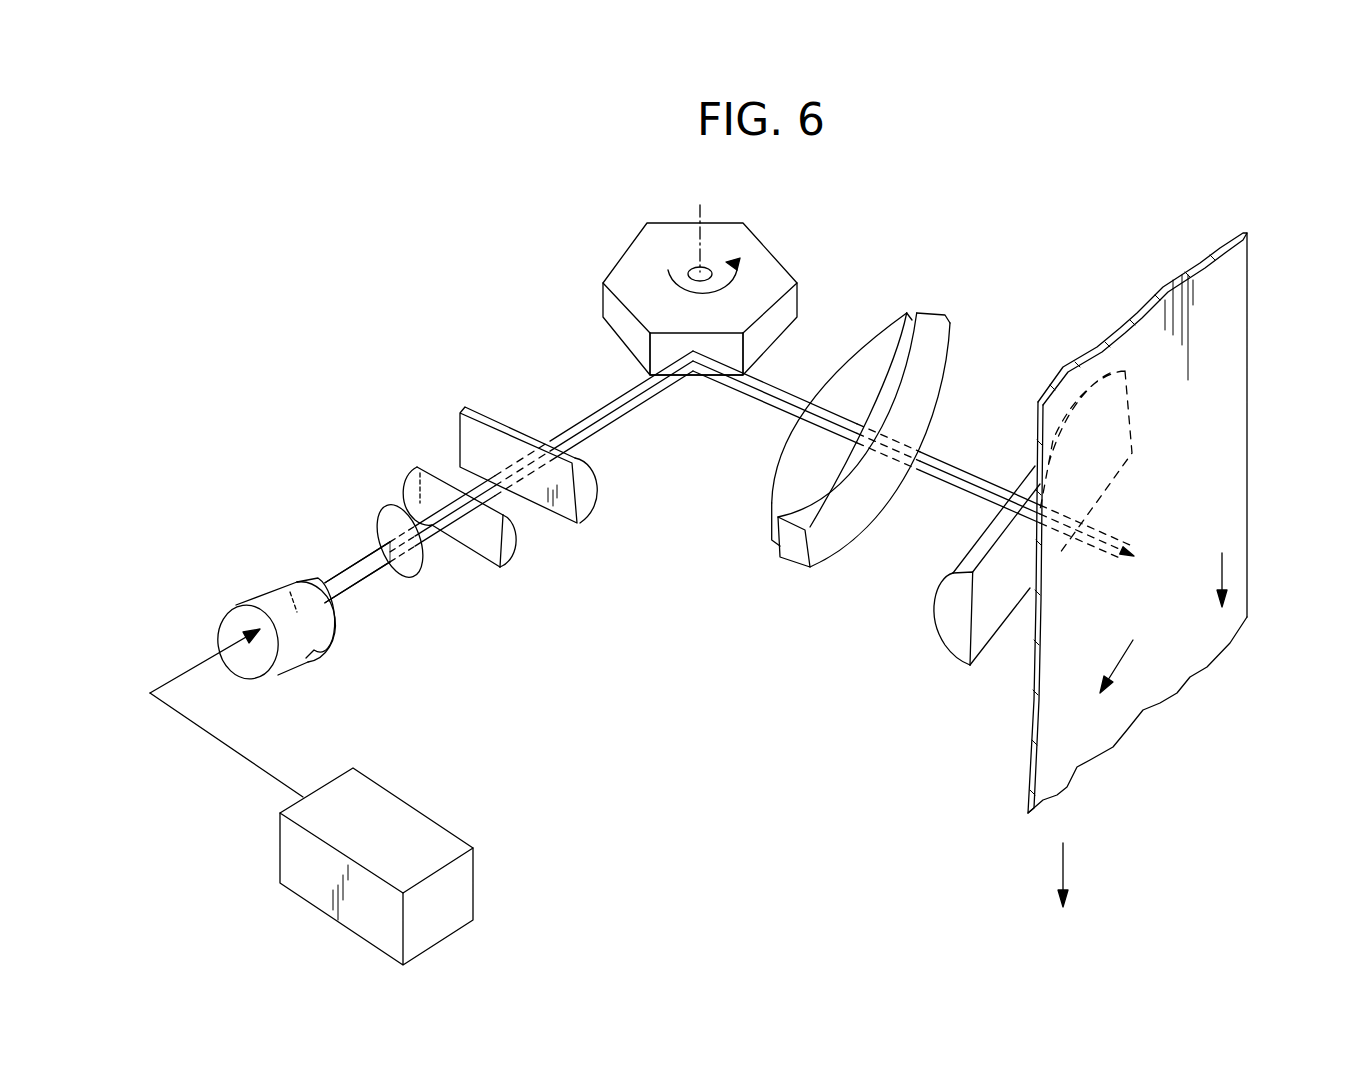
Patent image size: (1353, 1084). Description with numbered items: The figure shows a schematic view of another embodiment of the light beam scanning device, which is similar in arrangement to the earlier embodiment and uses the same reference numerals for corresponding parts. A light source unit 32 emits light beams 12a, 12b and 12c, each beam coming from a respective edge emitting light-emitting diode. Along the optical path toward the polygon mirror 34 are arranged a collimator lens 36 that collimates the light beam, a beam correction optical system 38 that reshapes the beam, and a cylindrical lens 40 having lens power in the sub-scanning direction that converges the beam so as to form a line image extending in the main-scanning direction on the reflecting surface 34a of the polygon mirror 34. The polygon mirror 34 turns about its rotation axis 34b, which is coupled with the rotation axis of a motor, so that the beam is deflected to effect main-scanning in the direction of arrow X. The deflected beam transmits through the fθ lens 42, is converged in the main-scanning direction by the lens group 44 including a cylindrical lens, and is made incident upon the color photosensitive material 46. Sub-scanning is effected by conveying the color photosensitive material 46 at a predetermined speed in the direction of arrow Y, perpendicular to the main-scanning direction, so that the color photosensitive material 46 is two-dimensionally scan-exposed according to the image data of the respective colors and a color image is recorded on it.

The light beam 12a is at (330, 567).
The light beam 12b is at (350, 562).
The light beam 12c is at (377, 545).
The laser light source unit 32 is at (413, 820).
The polygon mirror 34 is at (765, 282).
The reflecting surface 34a is at (663, 350).
The rotation axis 34b is at (700, 213).
The collimator lens 36 is at (412, 560).
The beam correction optical system 38 is at (512, 553).
The cylindrical lens 40 is at (585, 505).
The fθ lens 42 is at (928, 340).
The lens group 44 is at (957, 627).
The color photosensitive material 46 is at (1235, 417).